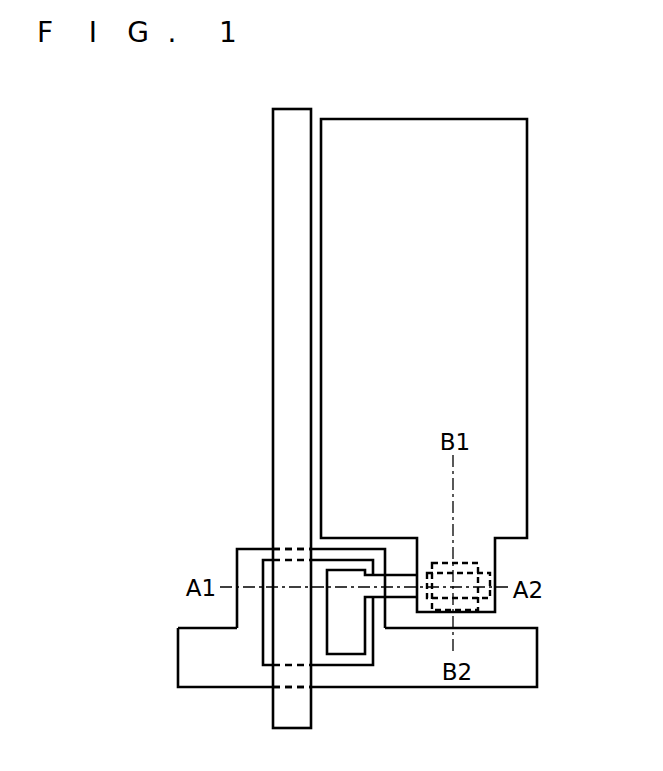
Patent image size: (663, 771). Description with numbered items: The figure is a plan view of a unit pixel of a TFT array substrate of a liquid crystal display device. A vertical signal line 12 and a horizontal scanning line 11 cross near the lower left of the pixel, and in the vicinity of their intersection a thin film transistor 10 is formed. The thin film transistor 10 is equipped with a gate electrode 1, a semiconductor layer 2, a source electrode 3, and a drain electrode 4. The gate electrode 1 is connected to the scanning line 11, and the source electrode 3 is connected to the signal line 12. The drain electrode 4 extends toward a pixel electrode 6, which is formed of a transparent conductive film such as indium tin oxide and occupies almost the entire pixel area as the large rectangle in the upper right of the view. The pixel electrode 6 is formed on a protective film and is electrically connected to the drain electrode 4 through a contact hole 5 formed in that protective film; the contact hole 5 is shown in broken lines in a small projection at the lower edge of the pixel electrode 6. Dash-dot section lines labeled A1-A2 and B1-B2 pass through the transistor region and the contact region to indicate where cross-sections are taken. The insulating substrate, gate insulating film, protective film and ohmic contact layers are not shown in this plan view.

The gate electrode 1 is at (247, 565).
The semiconductor layer 2 is at (318, 650).
The source electrode 3 is at (285, 633).
The drain electrode 4 is at (350, 645).
The contact hole 5 is at (467, 565).
The pixel electrode 6 is at (527, 403).
The thin film transistor 10 is at (383, 648).
The scanning line 11 is at (508, 677).
The signal line 12 is at (278, 242).